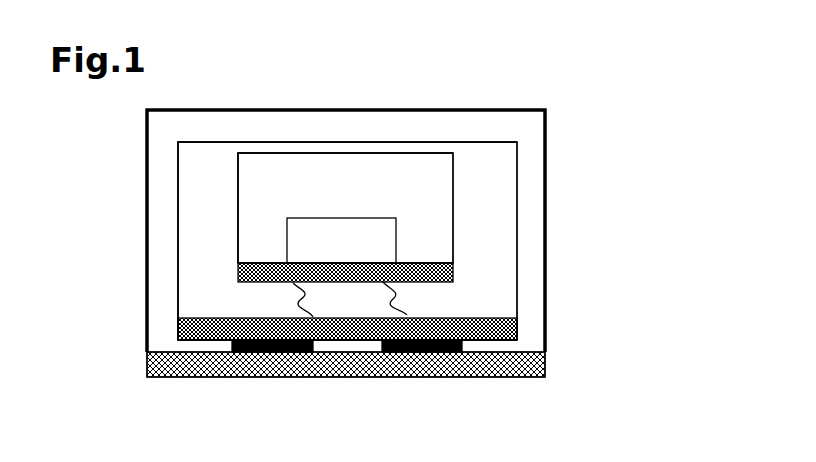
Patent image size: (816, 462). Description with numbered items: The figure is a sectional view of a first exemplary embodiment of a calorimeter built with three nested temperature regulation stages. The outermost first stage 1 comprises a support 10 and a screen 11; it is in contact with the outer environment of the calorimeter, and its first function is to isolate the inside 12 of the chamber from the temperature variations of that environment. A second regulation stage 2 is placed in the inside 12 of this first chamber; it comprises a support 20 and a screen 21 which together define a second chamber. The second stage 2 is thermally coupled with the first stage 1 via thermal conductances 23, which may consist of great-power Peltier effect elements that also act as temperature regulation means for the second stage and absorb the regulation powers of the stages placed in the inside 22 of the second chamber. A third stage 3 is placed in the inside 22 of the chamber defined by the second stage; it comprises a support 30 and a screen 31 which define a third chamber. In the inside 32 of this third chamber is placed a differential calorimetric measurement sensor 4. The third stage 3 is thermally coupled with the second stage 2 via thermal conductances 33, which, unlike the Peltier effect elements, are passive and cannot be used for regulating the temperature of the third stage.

The first stage 1 is at (585, 352).
The second regulation stage 2 is at (177, 247).
The third stage 3 is at (453, 217).
The differential calorimetric measurement sensor 4 is at (318, 236).
The support 10 is at (507, 363).
The screen 11 is at (546, 267).
The inside 12 is at (532, 330).
The support 20 is at (178, 340).
The screen 21 is at (178, 184).
The inside 22 is at (502, 167).
The thermal conductances 23 is at (237, 353).
The support 30 is at (245, 283).
The screen 31 is at (239, 200).
The inside 32 is at (373, 176).
The thermal conductances 33 is at (473, 343).